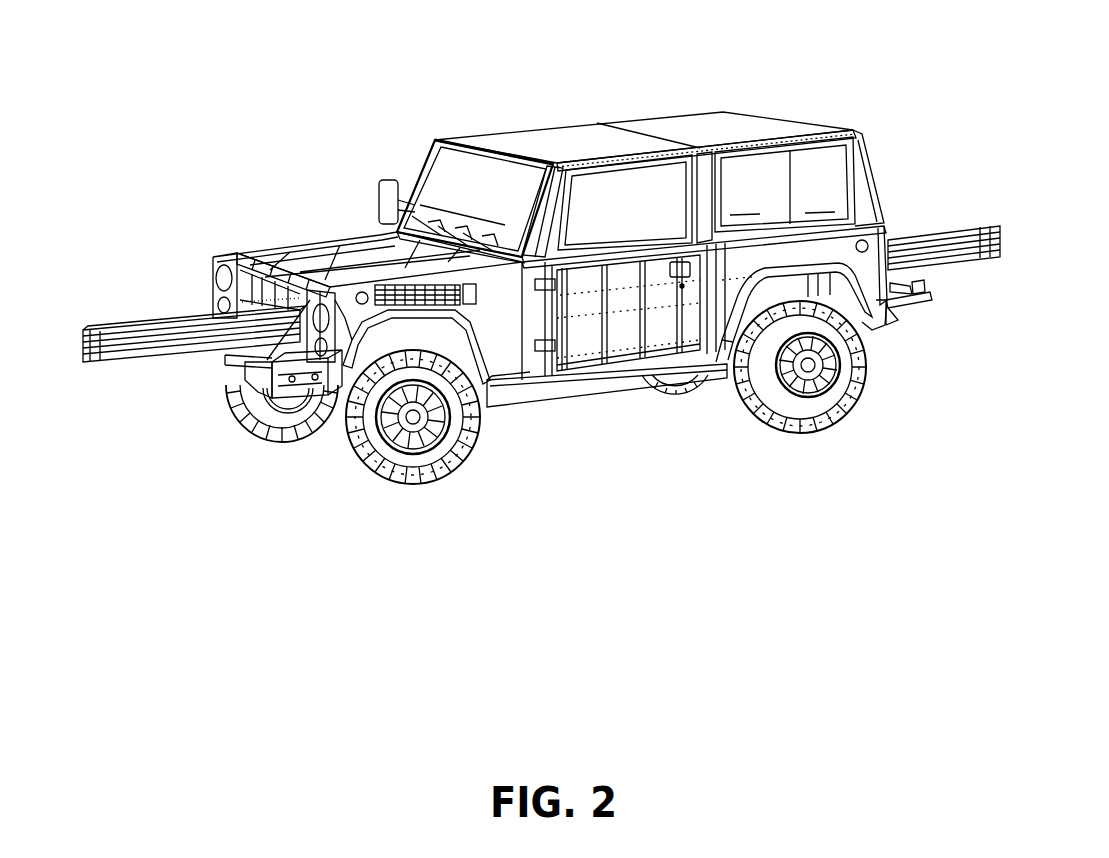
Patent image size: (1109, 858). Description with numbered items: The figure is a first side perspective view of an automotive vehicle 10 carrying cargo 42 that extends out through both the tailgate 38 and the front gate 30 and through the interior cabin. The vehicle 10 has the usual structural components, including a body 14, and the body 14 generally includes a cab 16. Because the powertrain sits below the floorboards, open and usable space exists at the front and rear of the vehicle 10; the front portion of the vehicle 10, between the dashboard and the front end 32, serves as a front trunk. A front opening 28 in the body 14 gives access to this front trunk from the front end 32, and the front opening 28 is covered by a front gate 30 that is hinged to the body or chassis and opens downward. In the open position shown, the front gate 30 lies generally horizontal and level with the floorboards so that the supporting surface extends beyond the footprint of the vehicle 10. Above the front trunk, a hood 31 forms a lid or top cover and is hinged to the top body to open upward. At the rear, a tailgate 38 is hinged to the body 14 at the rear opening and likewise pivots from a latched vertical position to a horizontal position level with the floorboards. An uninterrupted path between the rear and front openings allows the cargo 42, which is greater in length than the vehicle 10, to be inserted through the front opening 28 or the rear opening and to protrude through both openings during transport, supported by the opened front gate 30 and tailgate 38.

The automotive vehicle 10 is at (610, 101).
The body 14 is at (517, 358).
The cab 16 is at (527, 142).
The front opening 28 is at (220, 292).
The front gate 30 is at (228, 358).
The hood 31 is at (300, 258).
The front end 32 is at (300, 440).
The tailgate 38 is at (927, 290).
The cargo 42 is at (916, 235).